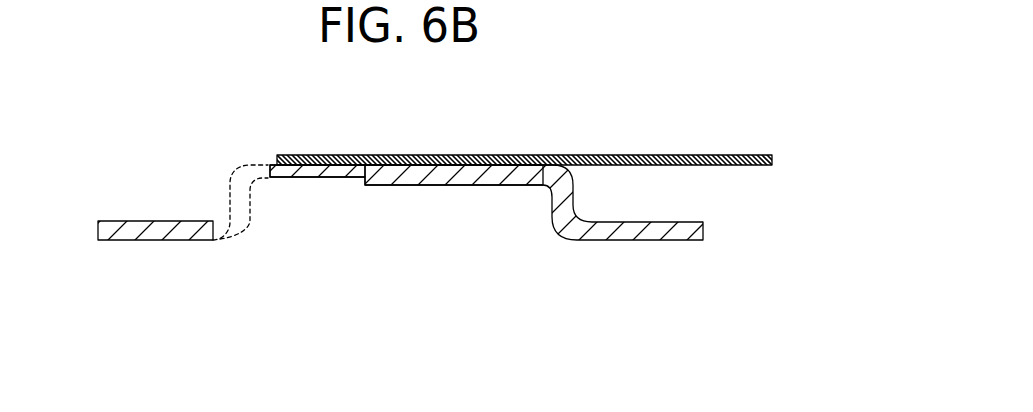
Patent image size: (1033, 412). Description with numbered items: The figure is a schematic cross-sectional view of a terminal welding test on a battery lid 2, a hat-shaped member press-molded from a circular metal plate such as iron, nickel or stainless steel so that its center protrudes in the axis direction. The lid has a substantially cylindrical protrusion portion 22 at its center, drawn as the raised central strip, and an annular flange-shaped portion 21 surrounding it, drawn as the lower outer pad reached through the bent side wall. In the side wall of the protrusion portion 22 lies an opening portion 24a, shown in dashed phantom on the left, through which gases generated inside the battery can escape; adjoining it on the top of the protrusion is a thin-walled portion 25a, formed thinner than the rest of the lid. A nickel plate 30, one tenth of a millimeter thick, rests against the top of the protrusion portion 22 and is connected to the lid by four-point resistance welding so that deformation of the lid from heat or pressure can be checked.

The battery lid 2 is at (68, 197).
The flange-shaped portion 21 is at (627, 242).
The protrusion portion 22 is at (438, 187).
The opening portion 24a is at (223, 219).
The thin-walled portion 25a is at (310, 178).
The nickel plate 30 is at (703, 156).